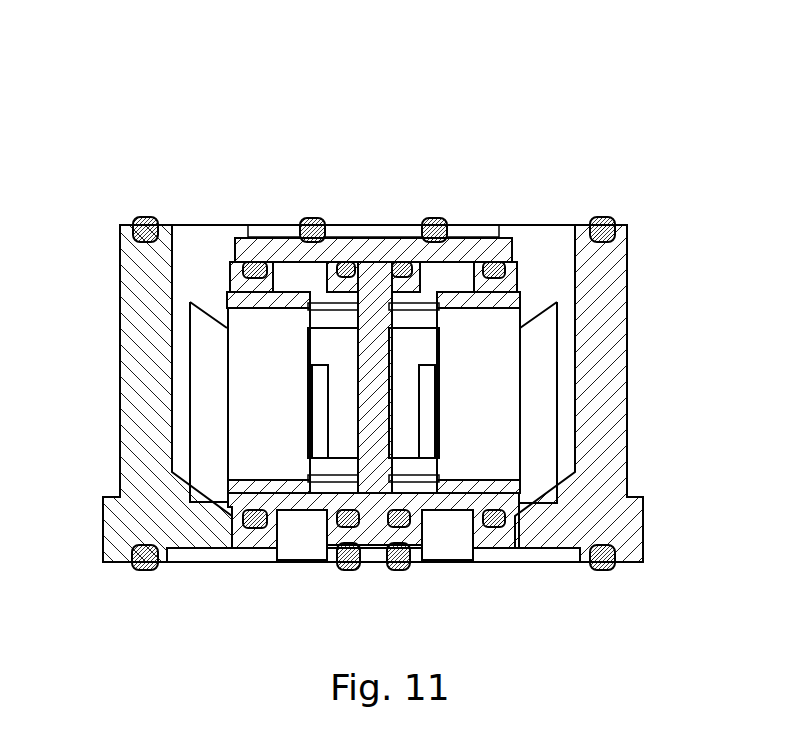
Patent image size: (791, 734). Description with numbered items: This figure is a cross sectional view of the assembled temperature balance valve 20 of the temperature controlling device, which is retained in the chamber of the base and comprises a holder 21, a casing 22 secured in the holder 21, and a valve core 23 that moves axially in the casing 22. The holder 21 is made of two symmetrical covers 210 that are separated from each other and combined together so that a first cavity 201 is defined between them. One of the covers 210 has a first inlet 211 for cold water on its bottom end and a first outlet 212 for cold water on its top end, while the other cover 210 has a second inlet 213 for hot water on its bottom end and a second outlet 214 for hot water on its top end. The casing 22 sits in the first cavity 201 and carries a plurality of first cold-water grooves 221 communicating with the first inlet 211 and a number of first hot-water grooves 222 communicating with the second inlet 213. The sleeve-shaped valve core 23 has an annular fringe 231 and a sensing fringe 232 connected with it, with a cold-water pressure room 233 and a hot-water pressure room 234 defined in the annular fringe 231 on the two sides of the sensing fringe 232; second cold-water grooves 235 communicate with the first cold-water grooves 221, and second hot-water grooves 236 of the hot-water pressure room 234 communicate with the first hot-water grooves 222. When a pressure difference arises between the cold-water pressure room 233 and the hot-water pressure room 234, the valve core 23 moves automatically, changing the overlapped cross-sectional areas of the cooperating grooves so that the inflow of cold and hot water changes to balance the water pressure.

The temperature balance valve 20 is at (609, 193).
The holder 21 is at (458, 92).
The covers 210 is at (365, 240).
The casing 22 is at (373, 262).
The valve core 23 is at (525, 413).
The first cavity 201 is at (208, 382).
The first inlet 211 is at (302, 535).
The first outlet 212 is at (208, 242).
The second inlet 213 is at (443, 535).
The second outlet 214 is at (545, 250).
The first cold-water grooves 221 is at (262, 252).
The first hot-water grooves 222 is at (483, 262).
The annular fringe 231 is at (257, 520).
The sensing fringe 232 is at (372, 478).
The cold-water pressure room 233 is at (255, 442).
The hot-water pressure room 234 is at (483, 392).
The second cold-water grooves 235 is at (322, 345).
The second hot-water grooves 236 is at (420, 343).